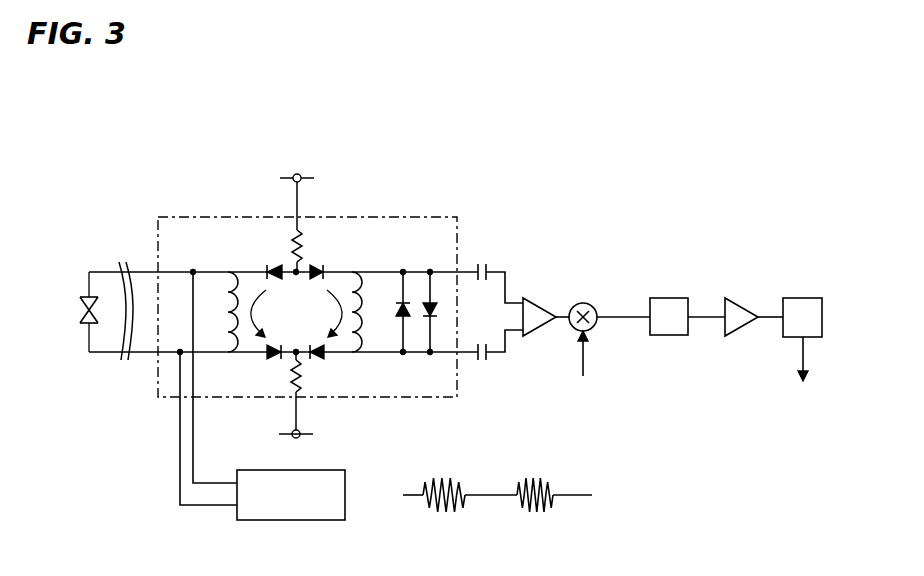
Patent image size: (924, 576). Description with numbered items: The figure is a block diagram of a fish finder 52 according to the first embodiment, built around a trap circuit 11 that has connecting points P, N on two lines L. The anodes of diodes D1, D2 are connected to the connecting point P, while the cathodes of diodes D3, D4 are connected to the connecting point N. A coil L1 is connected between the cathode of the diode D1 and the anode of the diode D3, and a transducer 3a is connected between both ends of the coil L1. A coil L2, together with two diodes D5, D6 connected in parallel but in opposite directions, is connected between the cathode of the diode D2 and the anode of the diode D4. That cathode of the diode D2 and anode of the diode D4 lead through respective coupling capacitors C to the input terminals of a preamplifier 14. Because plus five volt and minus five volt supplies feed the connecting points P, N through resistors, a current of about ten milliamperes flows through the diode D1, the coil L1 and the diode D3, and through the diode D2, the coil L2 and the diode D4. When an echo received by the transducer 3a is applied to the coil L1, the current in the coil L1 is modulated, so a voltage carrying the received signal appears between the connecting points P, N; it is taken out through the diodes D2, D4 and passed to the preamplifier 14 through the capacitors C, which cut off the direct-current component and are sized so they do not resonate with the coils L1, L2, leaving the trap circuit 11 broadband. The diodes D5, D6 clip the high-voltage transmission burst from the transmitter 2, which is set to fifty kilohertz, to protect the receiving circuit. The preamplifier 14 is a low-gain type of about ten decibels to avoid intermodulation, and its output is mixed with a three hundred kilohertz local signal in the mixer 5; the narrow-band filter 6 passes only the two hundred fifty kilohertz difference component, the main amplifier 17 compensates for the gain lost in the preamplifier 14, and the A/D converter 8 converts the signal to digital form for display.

The fish finder 52 is at (126, 136).
The trap circuit 11 is at (436, 216).
The transducer 3a is at (88, 267).
The lines L is at (142, 357).
The transmitter 2 is at (281, 520).
The preamplifier 14 is at (541, 294).
The mixer 5 is at (583, 296).
The filter 6 is at (668, 297).
The main amplifier 17 is at (742, 299).
The analog-to-digital (A/D) converter 8 is at (803, 298).
The connecting point P is at (293, 266).
The connecting point N is at (292, 358).
The coil L1 is at (221, 312).
The coil L2 is at (367, 312).
The capacitors C is at (479, 304).
The diode D1 is at (262, 262).
The diode D2 is at (326, 262).
The diode D3 is at (265, 363).
The diode D4 is at (326, 364).
The diode D5 is at (399, 321).
The diode D6 is at (427, 321).